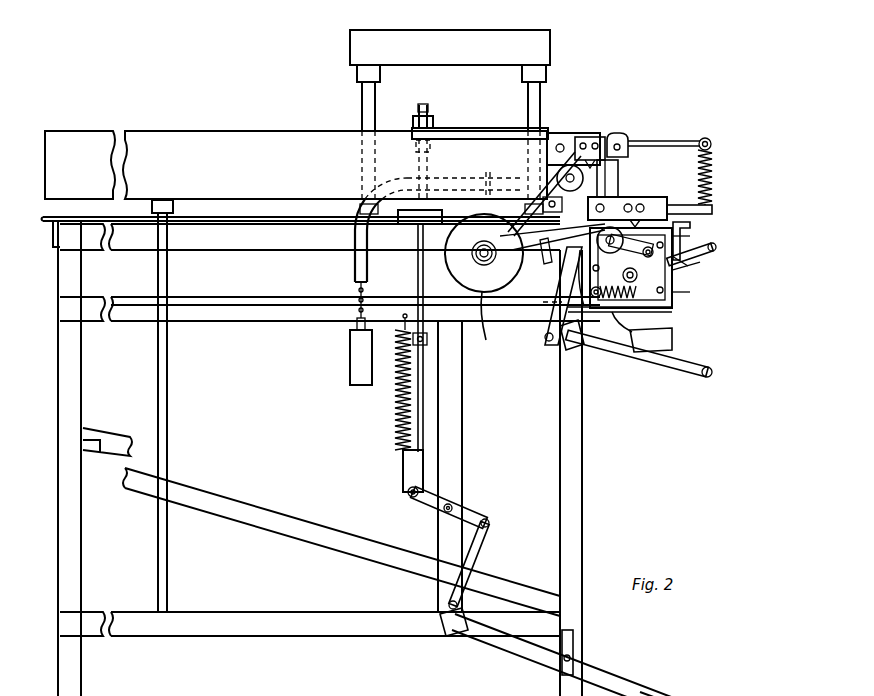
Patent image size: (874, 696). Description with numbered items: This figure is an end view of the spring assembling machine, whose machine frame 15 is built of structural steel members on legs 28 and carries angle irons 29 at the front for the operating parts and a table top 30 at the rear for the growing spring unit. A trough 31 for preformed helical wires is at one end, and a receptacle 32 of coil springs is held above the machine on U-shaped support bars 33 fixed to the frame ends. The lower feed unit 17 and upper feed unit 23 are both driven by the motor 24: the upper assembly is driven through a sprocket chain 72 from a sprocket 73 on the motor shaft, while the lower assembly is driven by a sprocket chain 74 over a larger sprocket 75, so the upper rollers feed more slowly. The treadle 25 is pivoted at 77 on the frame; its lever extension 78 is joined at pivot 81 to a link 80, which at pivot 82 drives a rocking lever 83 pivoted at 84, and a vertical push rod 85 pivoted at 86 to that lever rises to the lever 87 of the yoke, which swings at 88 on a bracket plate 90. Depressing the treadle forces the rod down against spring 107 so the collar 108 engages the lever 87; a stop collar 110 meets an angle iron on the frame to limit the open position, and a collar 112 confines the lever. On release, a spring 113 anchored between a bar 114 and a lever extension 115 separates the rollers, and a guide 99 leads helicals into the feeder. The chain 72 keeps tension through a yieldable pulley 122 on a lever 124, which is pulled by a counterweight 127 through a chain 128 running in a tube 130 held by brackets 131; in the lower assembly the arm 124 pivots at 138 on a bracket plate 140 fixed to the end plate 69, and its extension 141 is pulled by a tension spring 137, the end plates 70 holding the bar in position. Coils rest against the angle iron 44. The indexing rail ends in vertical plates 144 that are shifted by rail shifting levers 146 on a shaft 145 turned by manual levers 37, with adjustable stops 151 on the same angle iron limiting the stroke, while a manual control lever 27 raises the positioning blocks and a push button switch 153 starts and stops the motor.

The machine frame 15 is at (416, 300).
The lower feed unit 17 is at (656, 199).
The upper feed unit 23 is at (604, 127).
The motor 24 is at (486, 322).
The treadle 25 is at (651, 690).
The manual control lever 27 is at (704, 258).
The legs 28 is at (62, 536).
The angle irons 29 is at (698, 250).
The table top 30 is at (264, 217).
The trough 31 is at (212, 140).
The receptacle 32 is at (401, 46).
The U-shaped support bars 33 is at (362, 98).
The manual lever 37 is at (681, 376).
The angle iron 44 is at (684, 228).
The end plates 69 is at (674, 300).
The end plates 70 is at (612, 253).
The sprocket chain 72 is at (523, 186).
The sprocket 73 is at (477, 258).
The sprocket chain 74 is at (546, 260).
The sprocket 75 is at (482, 246).
The pivot 77 is at (576, 666).
The lever extension 78 is at (493, 638).
The link 80 is at (476, 556).
The pivot 81 is at (449, 604).
The pivot 82 is at (487, 518).
The rocking lever 83 is at (449, 508).
The pivot 84 is at (444, 512).
The push rod 85 is at (445, 396).
The pivot 86 is at (404, 490).
The lever 87 is at (460, 128).
The pivot 88 is at (632, 146).
The bracket plate 90 is at (612, 170).
The guide 99 is at (572, 136).
The spring 107 is at (398, 406).
The collar 108 is at (418, 118).
The stop collar 110 is at (430, 333).
The collar 112 is at (416, 150).
The spring 113 is at (714, 170).
The bar 114 is at (696, 206).
The lever extension 115 is at (684, 141).
The yieldable pulley 122 is at (610, 184).
The lever 124 is at (637, 270).
The counterweight 127 is at (350, 360).
The chain 128 is at (355, 290).
The tube 130 is at (355, 244).
The brackets 131 is at (486, 168).
The tension spring 137 is at (626, 312).
The pivot 138 is at (690, 238).
The bracket plate 140 is at (690, 264).
The extension 141 is at (690, 292).
The vertical plates 144 is at (574, 308).
The shaft 145 is at (551, 348).
The rail shifting lever 146 is at (544, 332).
The adjustable stops 151 is at (530, 312).
The push button switch 153 is at (674, 343).